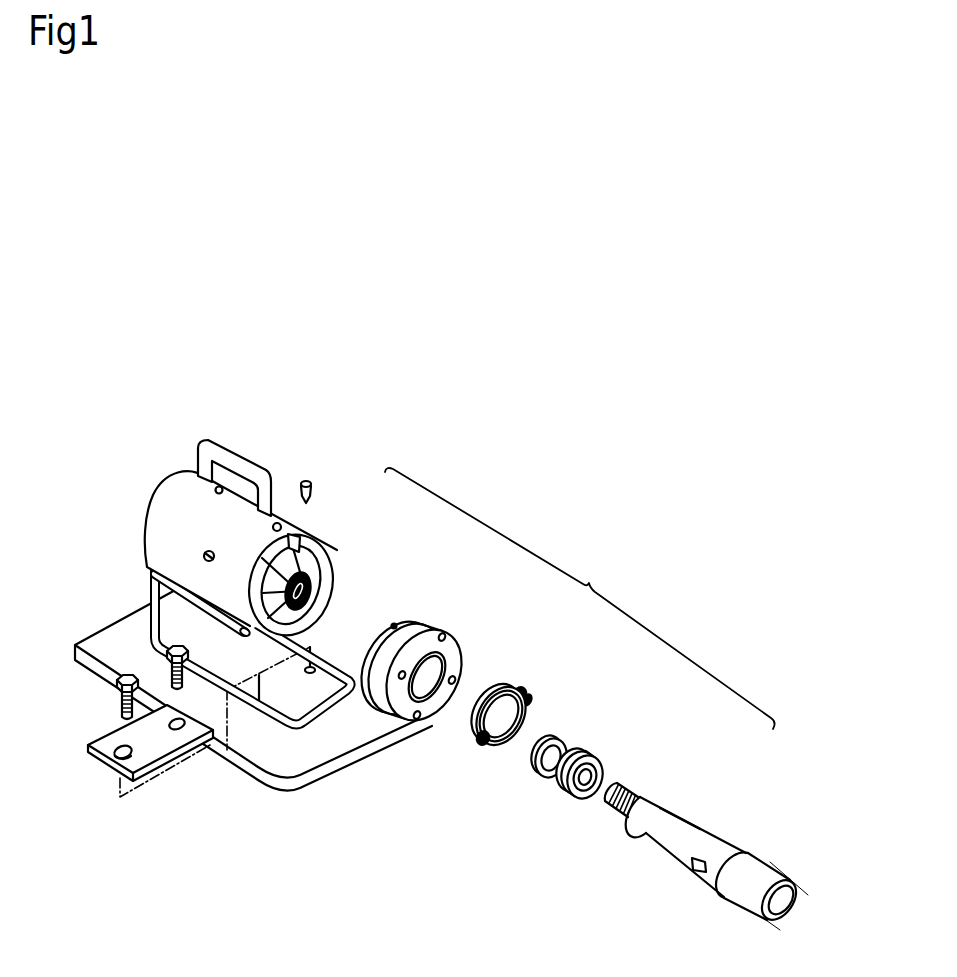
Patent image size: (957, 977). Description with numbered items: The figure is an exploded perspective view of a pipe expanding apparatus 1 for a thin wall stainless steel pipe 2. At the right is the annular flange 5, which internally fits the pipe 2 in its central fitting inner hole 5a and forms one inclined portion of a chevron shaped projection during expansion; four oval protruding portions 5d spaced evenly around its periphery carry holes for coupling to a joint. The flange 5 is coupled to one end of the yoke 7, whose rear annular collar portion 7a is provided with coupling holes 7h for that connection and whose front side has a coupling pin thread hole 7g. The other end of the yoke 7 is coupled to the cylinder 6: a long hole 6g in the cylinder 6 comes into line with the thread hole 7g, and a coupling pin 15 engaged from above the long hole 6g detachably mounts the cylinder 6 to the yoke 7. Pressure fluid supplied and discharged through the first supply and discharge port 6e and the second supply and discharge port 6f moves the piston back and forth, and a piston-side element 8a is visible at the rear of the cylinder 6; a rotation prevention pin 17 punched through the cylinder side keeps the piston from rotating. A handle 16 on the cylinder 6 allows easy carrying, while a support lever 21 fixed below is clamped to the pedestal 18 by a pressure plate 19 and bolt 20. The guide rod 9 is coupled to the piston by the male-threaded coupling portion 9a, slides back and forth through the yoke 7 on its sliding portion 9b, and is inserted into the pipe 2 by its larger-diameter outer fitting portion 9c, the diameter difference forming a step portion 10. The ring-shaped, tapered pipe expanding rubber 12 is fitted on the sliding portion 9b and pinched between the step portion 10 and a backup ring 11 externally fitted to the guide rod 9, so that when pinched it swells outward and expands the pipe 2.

The motor-driven power unit 1 is at (602, 580).
The thin wall stainless steel pipe 2 is at (770, 868).
The flange 5 is at (515, 720).
The fitting inner hole 5a is at (504, 746).
The protruding portions 5d is at (480, 726).
The cylinder 6 is at (242, 540).
The first supply and discharge port 6e is at (282, 525).
The second supply and discharge port 6f is at (215, 489).
The long hole 6g is at (301, 534).
The yoke 7 is at (443, 672).
The annular collar portion 7a is at (459, 636).
The coupling pin thread hole 7g is at (396, 624).
The coupling holes 7h is at (451, 684).
The motor shaft 8a is at (302, 571).
The guide rod 9 is at (680, 851).
The coupling portion 9a is at (611, 805).
The sliding portion 9b is at (642, 822).
The outer fitting portion 9c is at (666, 855).
The step portion 10 is at (665, 804).
The backup ring 11 is at (533, 769).
The pipe expanding rubber 12 is at (592, 750).
The coupling pin 15 is at (309, 480).
The handle 16 is at (243, 447).
The rotation prevention pin 17 is at (204, 555).
The pedestal 18 is at (283, 762).
The pressure plate 19 is at (130, 768).
The bolt 20 is at (170, 655).
The support lever 21 is at (156, 602).